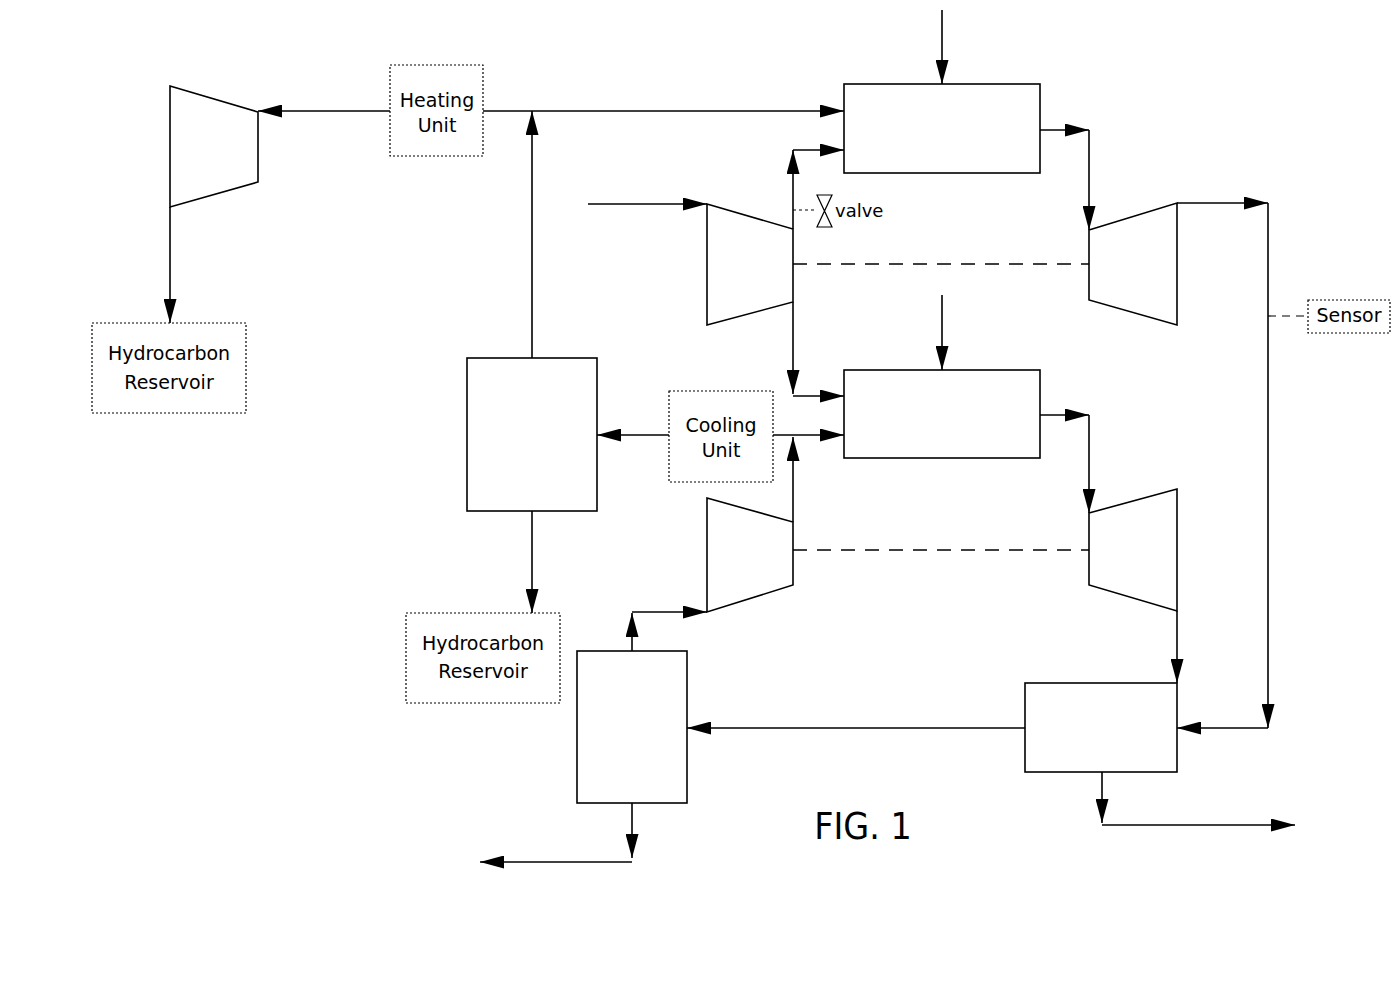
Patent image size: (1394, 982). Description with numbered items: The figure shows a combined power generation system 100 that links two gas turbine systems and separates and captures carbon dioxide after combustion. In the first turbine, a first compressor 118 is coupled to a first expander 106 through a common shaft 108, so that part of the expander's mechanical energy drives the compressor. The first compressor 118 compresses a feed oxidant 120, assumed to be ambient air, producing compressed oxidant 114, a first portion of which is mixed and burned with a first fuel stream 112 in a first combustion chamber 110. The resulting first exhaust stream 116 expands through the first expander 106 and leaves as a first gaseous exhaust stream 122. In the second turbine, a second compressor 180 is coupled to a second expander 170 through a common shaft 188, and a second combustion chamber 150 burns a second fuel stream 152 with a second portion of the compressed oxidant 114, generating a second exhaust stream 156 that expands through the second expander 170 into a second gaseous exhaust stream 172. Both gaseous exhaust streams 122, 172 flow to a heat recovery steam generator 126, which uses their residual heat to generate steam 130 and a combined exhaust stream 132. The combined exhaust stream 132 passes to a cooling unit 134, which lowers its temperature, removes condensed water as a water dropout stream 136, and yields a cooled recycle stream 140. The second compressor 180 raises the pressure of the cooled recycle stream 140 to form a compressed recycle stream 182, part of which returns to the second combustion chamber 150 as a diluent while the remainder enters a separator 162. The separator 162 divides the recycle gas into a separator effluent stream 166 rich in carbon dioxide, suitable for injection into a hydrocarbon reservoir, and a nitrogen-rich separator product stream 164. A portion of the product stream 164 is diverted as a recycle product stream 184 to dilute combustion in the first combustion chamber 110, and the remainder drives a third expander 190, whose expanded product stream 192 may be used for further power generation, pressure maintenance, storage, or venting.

The combined power generation system 100 is at (1242, 74).
The first expander 106 is at (1129, 275).
The common shaft 108 is at (977, 264).
The first combustion chamber 110 is at (930, 140).
The first fuel stream 112 is at (947, 26).
The compressed oxidant 114 is at (793, 184).
The first exhaust stream 116 is at (1091, 164).
The first compressor 118 is at (735, 275).
The feed oxidant 120 is at (617, 204).
The first gaseous exhaust stream 122 is at (1212, 203).
The heat recovery steam generator 126 is at (1089, 738).
The steam 130 is at (1218, 825).
The combined exhaust stream 132 is at (865, 728).
The cooling unit 134 is at (619, 742).
The water dropout stream 136 is at (525, 862).
The cooled recycle stream 140 is at (645, 612).
The second combustion chamber 150 is at (930, 424).
The second fuel stream 152 is at (947, 316).
The second exhaust stream 156 is at (1091, 448).
The separator 162 is at (519, 447).
The separator product stream 164 is at (322, 111).
The separator effluent stream 166 is at (532, 557).
The second expander 170 is at (1129, 558).
The second gaseous exhaust stream 172 is at (1180, 634).
The second compressor 180 is at (735, 565).
The compressed recycle stream 182 is at (640, 435).
The recycle product stream 184 is at (770, 111).
The common shaft 188 is at (925, 550).
The third expander 190 is at (205, 158).
The expanded product stream 192 is at (170, 258).